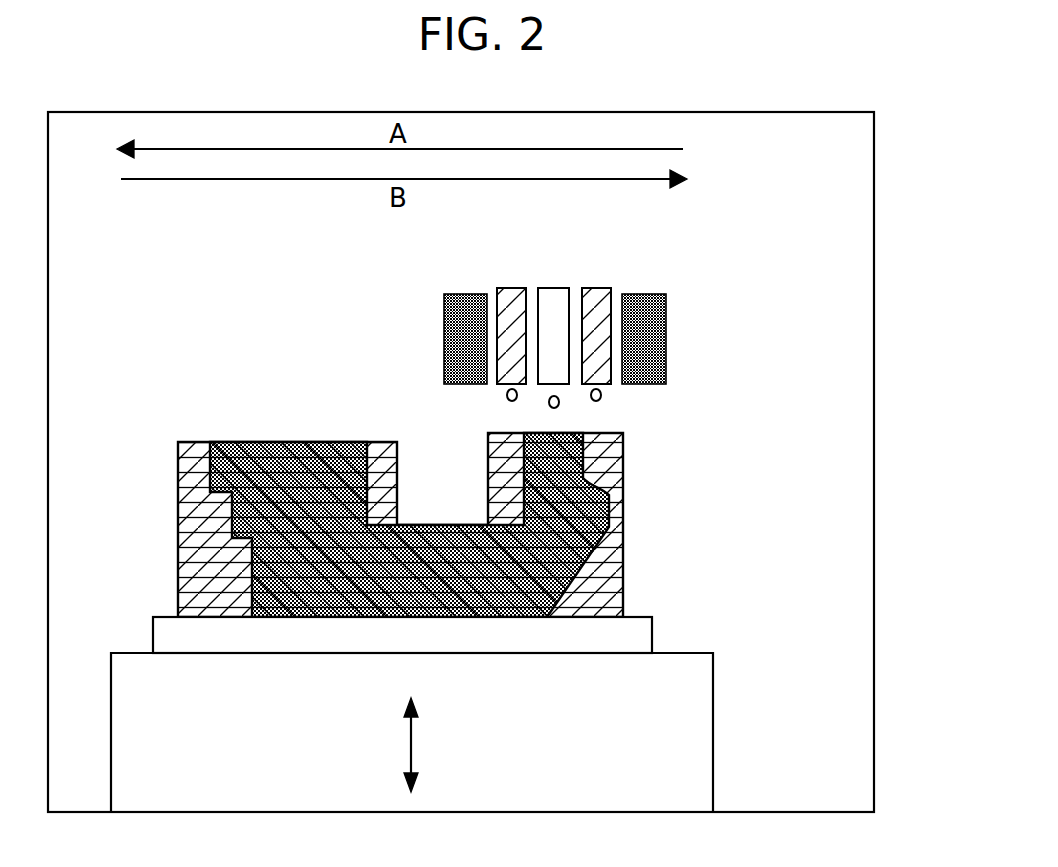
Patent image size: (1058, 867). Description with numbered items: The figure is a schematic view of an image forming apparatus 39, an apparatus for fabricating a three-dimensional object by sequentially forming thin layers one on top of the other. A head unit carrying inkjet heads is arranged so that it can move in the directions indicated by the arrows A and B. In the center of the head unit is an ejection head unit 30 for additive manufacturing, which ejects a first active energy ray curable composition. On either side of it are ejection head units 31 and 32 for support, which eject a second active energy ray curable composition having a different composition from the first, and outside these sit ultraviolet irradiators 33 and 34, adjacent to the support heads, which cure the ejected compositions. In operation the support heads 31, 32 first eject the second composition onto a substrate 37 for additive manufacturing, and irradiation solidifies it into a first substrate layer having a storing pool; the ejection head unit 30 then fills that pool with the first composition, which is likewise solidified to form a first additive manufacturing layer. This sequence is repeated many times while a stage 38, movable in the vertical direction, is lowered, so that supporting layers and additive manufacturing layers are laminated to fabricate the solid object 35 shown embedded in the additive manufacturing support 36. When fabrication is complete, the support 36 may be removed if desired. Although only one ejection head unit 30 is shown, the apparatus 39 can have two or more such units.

The ejection head unit for additive manufacturing 30 is at (556, 288).
The ejection head unit for support 31 is at (514, 288).
The ejection head unit for support 32 is at (599, 288).
The ultraviolet irradiator 33 is at (444, 315).
The ultraviolet irradiator 34 is at (666, 313).
The solid object 35 is at (285, 442).
The additive manufacturing support 36 is at (623, 478).
The substrate for additive manufacturing 37 is at (652, 632).
The stage 38 is at (713, 666).
The image forming apparatus 39 is at (874, 135).